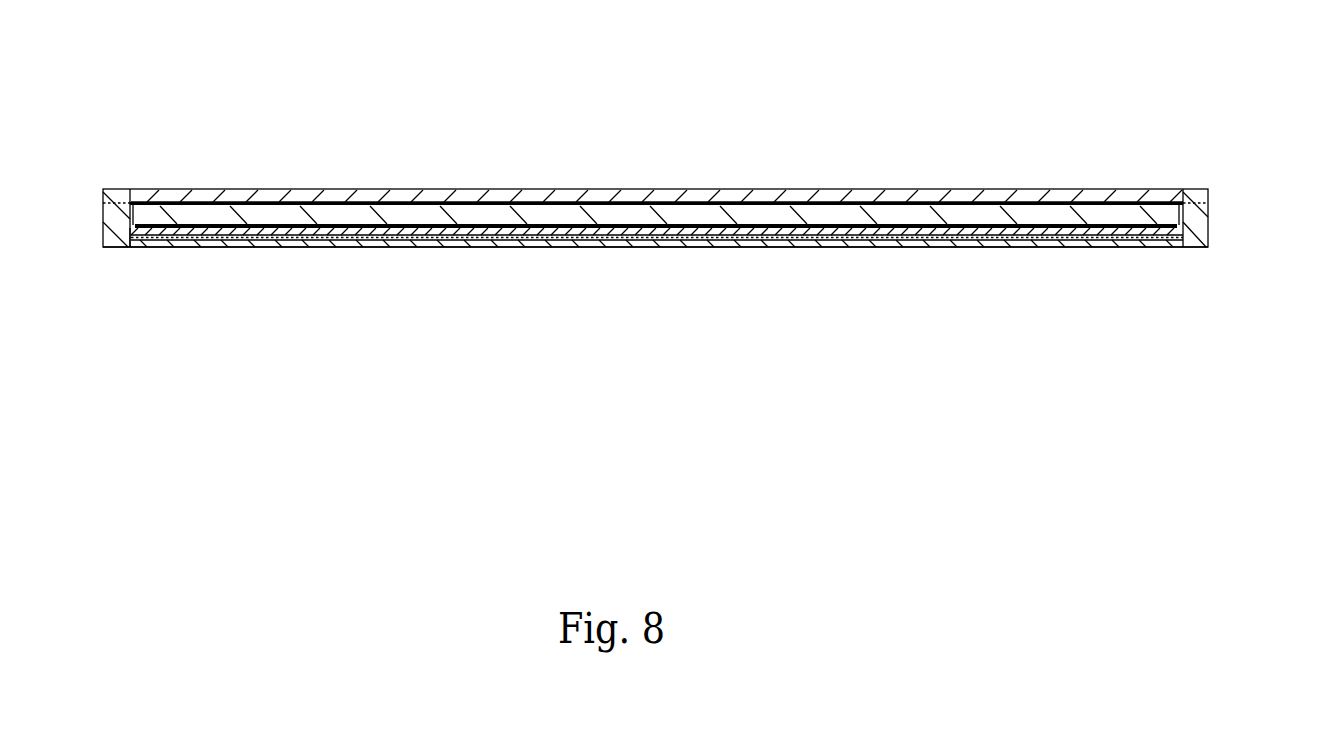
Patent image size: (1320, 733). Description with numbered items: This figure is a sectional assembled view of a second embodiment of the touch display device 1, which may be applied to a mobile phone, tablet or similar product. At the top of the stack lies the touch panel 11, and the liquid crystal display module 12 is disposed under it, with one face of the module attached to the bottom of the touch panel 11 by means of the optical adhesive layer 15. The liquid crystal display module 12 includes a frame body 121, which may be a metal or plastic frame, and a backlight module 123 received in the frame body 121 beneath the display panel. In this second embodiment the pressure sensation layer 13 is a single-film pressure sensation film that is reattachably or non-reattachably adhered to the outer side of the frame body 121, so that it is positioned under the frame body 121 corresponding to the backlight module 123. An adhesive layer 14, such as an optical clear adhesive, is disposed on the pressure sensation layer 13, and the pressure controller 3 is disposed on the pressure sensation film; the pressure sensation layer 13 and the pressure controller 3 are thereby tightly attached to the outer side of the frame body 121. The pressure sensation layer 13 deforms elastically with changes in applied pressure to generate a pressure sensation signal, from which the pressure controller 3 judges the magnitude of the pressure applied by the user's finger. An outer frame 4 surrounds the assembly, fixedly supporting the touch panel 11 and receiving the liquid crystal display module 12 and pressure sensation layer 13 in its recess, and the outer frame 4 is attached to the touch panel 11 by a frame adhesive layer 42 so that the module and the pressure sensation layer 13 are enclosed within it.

The touch display device 1 is at (1172, 107).
The touch panel 11 is at (430, 192).
The liquid crystal display module 12 is at (193, 204).
The frame body 121 is at (125, 189).
The backlight module 123 is at (222, 228).
The pressure sensation layer 13 is at (150, 243).
The adhesive layer 14 is at (185, 243).
The optical adhesive layer 15 is at (322, 197).
The pressure controller 3 is at (128, 242).
The outer frame 4 is at (1200, 225).
The frame adhesive layer 42 is at (112, 203).